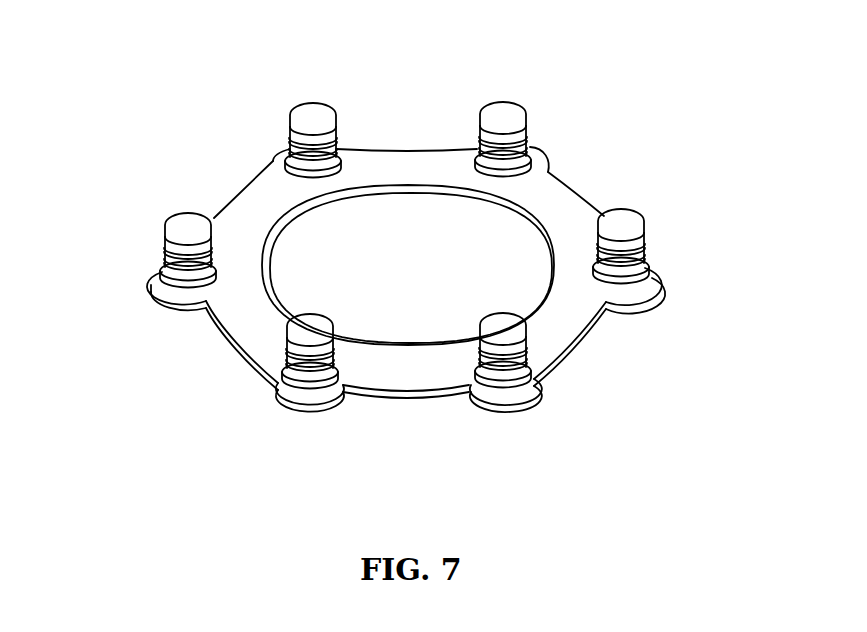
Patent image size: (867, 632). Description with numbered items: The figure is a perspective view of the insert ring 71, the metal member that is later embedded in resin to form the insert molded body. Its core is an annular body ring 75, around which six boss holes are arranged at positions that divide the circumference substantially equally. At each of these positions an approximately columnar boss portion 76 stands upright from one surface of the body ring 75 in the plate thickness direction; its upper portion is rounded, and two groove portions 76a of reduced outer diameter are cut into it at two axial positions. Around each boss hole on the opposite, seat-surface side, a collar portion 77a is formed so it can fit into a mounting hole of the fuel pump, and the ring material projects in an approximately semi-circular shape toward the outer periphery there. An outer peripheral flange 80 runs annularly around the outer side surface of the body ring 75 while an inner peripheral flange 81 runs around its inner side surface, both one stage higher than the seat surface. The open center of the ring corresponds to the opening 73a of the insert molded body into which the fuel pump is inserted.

The insert ring 71 is at (407, 103).
The opening 73a is at (328, 254).
The body ring 75 is at (561, 203).
The boss portion 76 is at (312, 106).
The groove portion 76a is at (176, 263).
The collar portion 77a is at (160, 307).
The outer peripheral flange 80 is at (226, 340).
The inner peripheral flange 81 is at (412, 193).